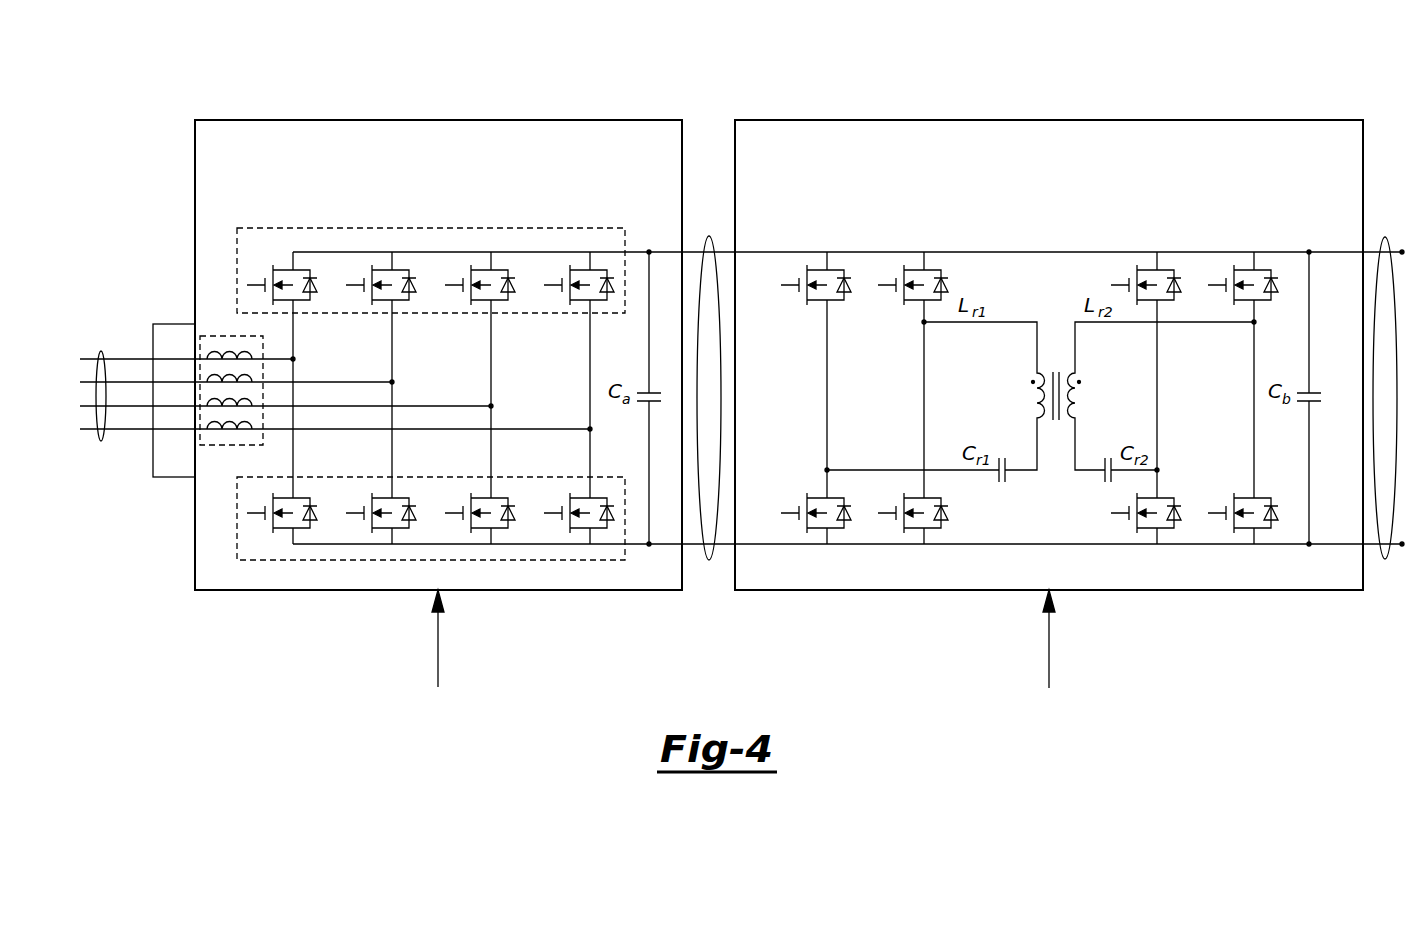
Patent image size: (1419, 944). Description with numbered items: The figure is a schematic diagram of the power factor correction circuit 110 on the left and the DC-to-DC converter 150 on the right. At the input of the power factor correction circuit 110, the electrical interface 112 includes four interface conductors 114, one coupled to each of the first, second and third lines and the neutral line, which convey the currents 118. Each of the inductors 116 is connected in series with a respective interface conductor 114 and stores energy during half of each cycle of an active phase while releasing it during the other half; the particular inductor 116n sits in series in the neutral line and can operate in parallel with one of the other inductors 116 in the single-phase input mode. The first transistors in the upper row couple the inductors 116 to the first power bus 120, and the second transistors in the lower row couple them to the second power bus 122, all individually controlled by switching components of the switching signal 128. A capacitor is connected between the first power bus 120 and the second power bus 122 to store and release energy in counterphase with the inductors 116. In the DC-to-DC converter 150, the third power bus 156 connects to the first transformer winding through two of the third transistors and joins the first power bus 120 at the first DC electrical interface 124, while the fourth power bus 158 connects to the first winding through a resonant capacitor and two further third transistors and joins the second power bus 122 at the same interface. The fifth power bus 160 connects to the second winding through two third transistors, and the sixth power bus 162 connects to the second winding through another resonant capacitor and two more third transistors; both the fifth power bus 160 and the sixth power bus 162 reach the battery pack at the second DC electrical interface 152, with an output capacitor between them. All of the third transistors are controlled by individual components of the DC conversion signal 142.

The power factor correction circuit 110 is at (438, 120).
The electrical interface 112 is at (175, 324).
The interface conductors 114 is at (165, 431).
The inductors 116 is at (219, 333).
The particular inductor 116n is at (222, 432).
The currents 118 is at (101, 351).
The first power bus 120 is at (314, 252).
The second power bus 122 is at (343, 544).
The first DC electrical interface 124 is at (709, 236).
The switching signal 128 is at (440, 637).
The DC conversion signal 142 is at (1051, 637).
The DC-to-DC converter 150 is at (1049, 120).
The second DC electrical interface 152 is at (1385, 237).
The third power bus 156 is at (850, 252).
The fourth power bus 158 is at (868, 544).
The fifth power bus 160 is at (1225, 252).
The sixth power bus 162 is at (1208, 544).